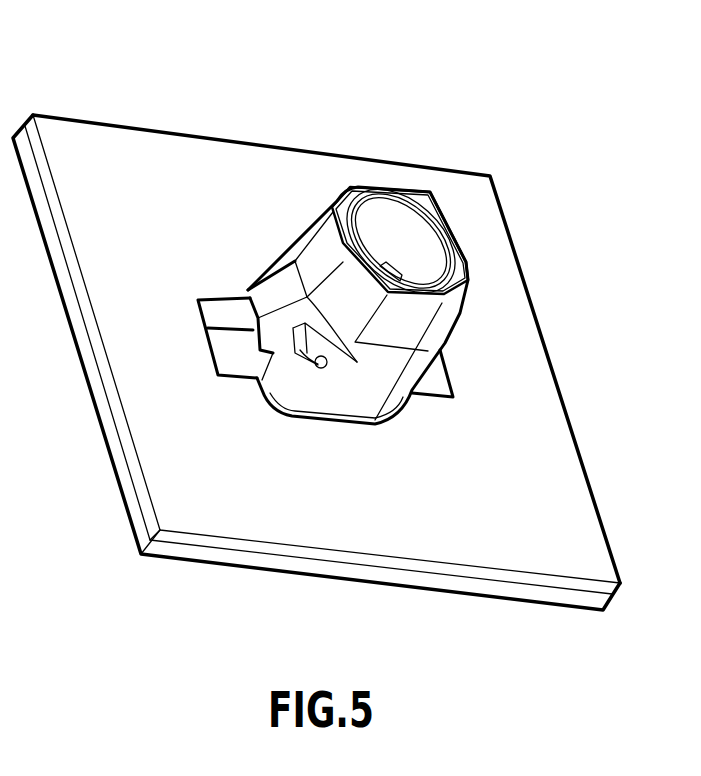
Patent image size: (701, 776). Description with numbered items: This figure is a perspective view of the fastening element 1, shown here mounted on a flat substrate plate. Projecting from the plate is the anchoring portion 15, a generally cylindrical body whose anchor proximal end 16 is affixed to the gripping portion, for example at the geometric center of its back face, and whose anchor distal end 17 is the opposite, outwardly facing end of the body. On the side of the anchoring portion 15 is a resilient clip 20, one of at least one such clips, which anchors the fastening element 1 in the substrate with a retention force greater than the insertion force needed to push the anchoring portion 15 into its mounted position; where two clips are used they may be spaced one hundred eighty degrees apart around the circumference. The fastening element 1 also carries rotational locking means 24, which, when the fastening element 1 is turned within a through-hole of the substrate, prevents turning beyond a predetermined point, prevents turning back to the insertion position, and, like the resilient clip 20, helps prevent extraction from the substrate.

The fastening element 1 is at (350, 113).
The anchoring portion 15 is at (389, 285).
The anchor proximal end 16 is at (402, 417).
The anchor distal end 17 is at (393, 188).
The resilient clip 20 is at (268, 295).
The rotational locking means 24 is at (330, 374).